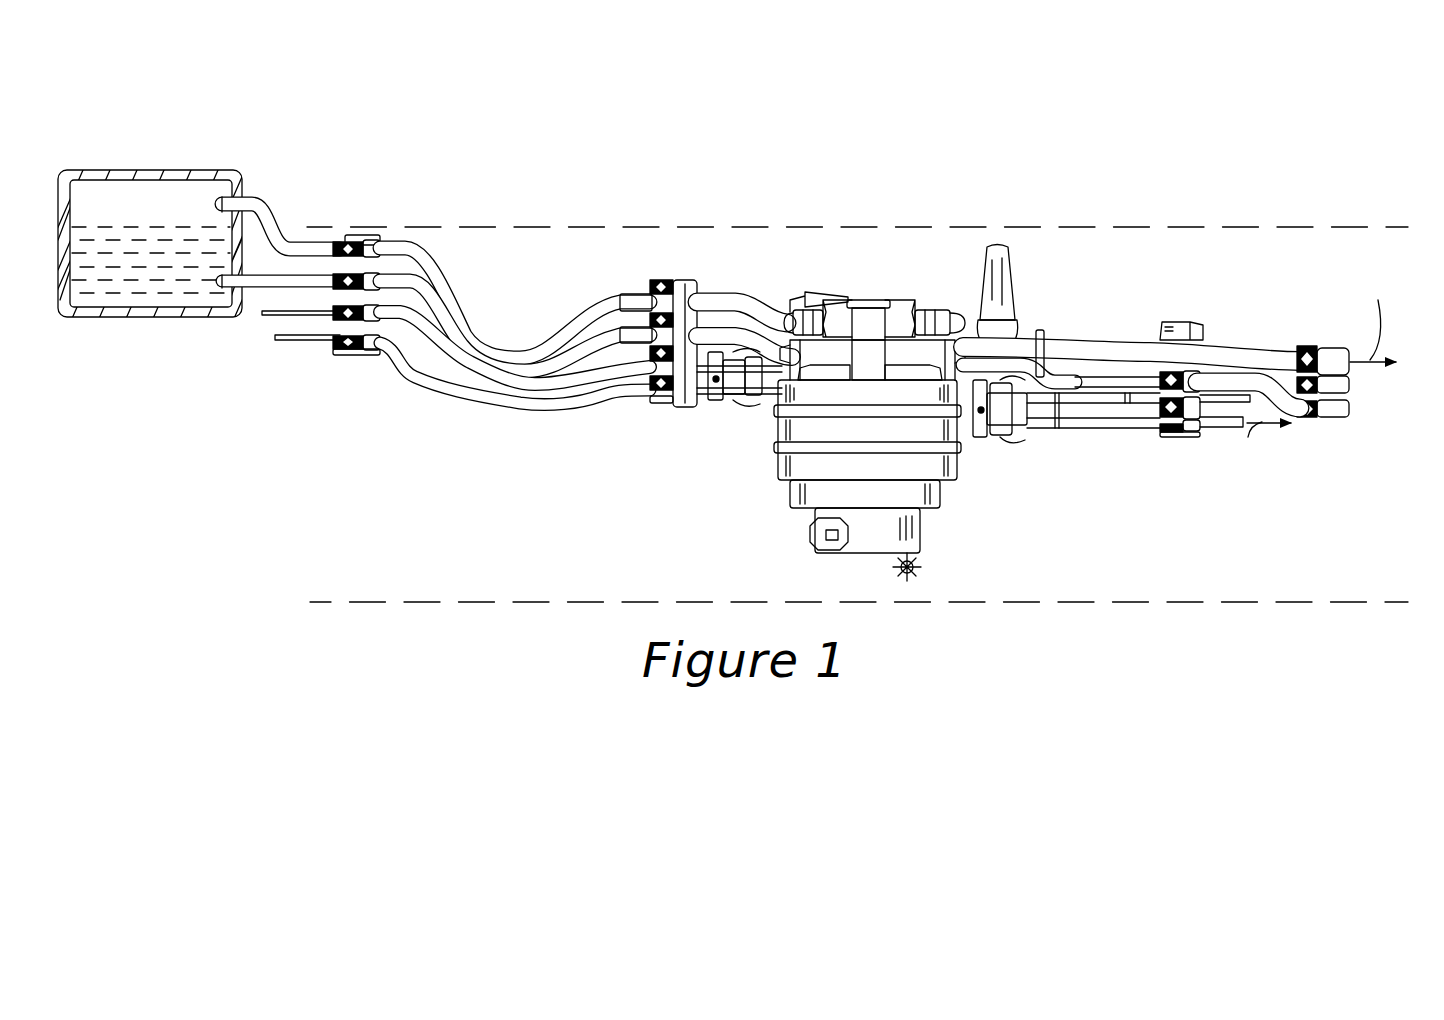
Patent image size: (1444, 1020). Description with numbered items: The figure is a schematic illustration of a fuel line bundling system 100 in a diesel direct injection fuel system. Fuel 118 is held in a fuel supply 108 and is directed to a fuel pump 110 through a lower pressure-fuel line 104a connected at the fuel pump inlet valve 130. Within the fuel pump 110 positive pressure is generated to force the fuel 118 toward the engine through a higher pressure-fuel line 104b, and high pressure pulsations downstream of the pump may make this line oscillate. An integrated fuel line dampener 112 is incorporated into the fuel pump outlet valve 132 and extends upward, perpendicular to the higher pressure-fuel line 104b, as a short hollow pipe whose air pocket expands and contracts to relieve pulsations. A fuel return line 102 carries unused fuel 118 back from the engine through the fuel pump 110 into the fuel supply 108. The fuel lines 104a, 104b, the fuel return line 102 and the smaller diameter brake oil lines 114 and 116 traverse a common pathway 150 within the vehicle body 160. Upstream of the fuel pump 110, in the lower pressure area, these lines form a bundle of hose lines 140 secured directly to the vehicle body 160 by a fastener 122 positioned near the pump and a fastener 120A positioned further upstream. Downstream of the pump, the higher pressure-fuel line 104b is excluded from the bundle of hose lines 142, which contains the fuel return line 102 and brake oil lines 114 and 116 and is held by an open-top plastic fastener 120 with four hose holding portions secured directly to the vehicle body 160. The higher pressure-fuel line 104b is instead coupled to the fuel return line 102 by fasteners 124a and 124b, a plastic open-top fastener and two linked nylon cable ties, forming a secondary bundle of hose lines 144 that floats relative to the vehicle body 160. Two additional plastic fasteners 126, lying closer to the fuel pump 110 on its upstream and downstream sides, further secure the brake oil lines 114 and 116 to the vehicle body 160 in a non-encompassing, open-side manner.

The fuel line bundling system 100 is at (300, 110).
The fuel return line 102 is at (421, 291).
The lower pressure-fuel line 104a is at (423, 256).
The higher pressure-fuel line 104b is at (1125, 345).
The fuel supply 108 is at (165, 170).
The fuel pump 110 is at (866, 300).
The integrated fuel line dampener 112 is at (1003, 247).
The brake oil line 114 is at (262, 316).
The brake oil line 116 is at (290, 341).
The fuel 118 is at (110, 302).
The fastener 120 is at (1186, 433).
The fastener 120A is at (350, 235).
The fastener 122 is at (675, 408).
The fastener 124a is at (1318, 344).
The fastener 124b is at (1040, 330).
The fastener 126 is at (740, 408).
The fuel pump inlet valve 130 is at (832, 290).
The fuel pump outlet valve 132 is at (968, 316).
The bundle of hose lines 140 is at (574, 418).
The bundle of hose lines 142 is at (1121, 445).
The secondary bundle of hose lines 144 is at (1274, 331).
The common pathway 150 is at (1297, 227).
The vehicle body 160 is at (578, 277).